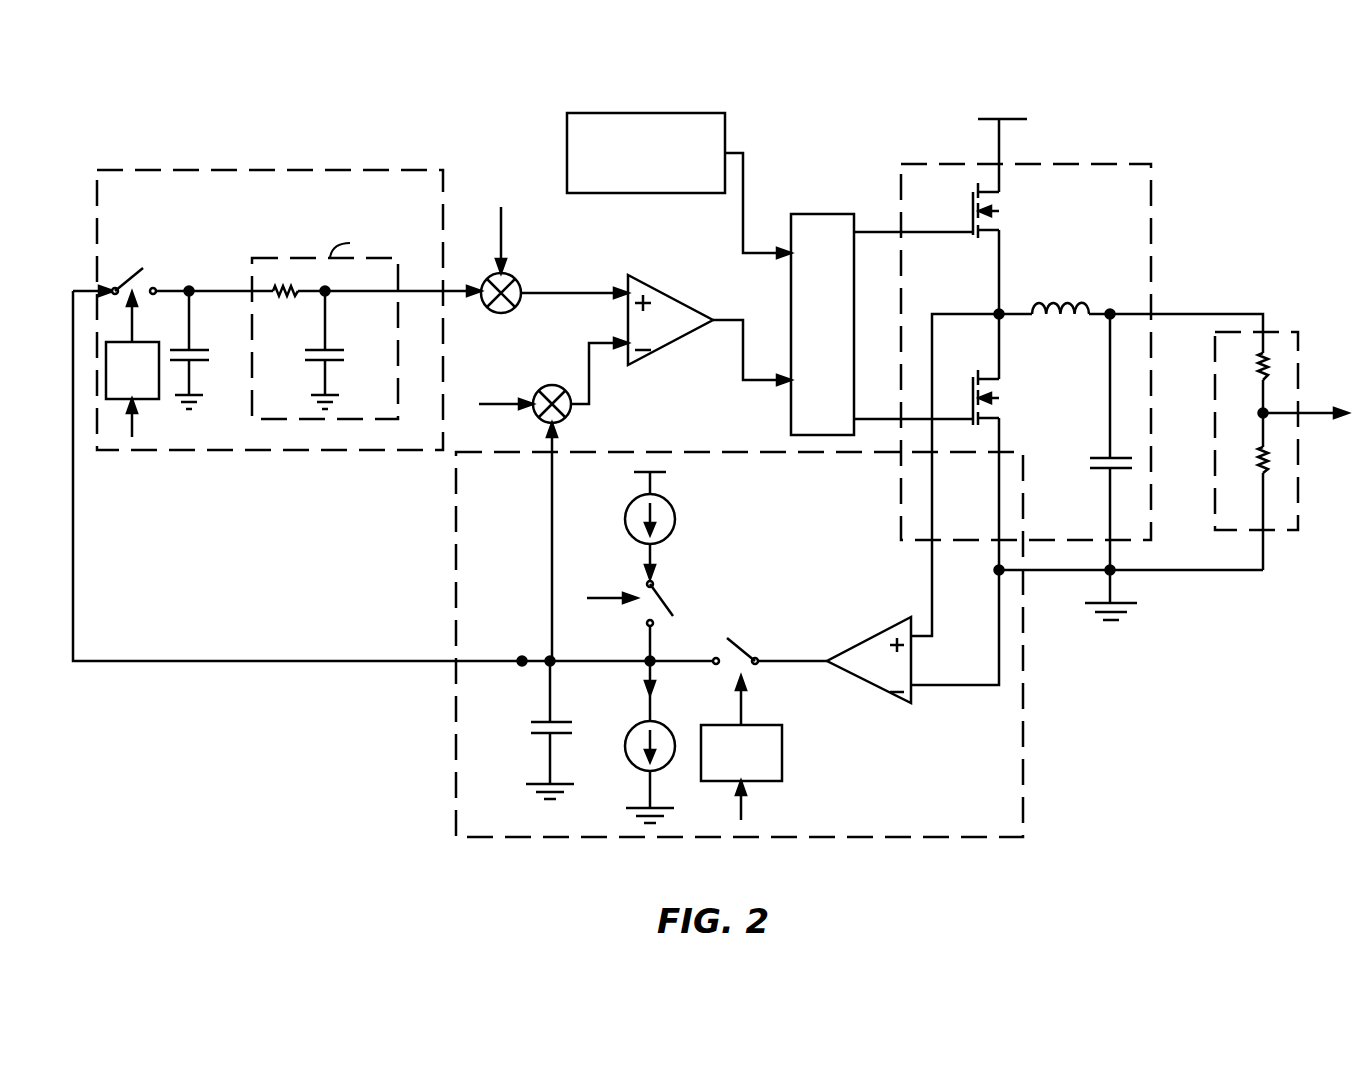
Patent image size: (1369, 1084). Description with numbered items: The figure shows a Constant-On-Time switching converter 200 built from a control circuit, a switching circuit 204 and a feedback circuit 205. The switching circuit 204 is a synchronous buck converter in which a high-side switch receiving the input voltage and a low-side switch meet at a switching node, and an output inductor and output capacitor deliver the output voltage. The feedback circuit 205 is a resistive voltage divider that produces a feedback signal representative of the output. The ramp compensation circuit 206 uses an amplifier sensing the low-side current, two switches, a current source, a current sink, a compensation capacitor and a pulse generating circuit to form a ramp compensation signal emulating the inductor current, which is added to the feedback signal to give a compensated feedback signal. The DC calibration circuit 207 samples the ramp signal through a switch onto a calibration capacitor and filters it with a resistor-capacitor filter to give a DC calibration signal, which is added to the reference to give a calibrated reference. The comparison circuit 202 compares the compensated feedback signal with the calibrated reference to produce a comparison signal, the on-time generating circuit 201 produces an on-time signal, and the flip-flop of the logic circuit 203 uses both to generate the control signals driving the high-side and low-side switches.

The Constant-On-Time switching converter 200 is at (438, 121).
The on-time generating circuit 201 is at (567, 154).
The comparison circuit 202 is at (660, 348).
The logic circuit 203 is at (830, 214).
The switching circuit 204 is at (1110, 164).
The feedback circuit 205 is at (1298, 355).
The ramp compensation circuit 206 is at (543, 837).
The DC calibration circuit 207 is at (215, 170).